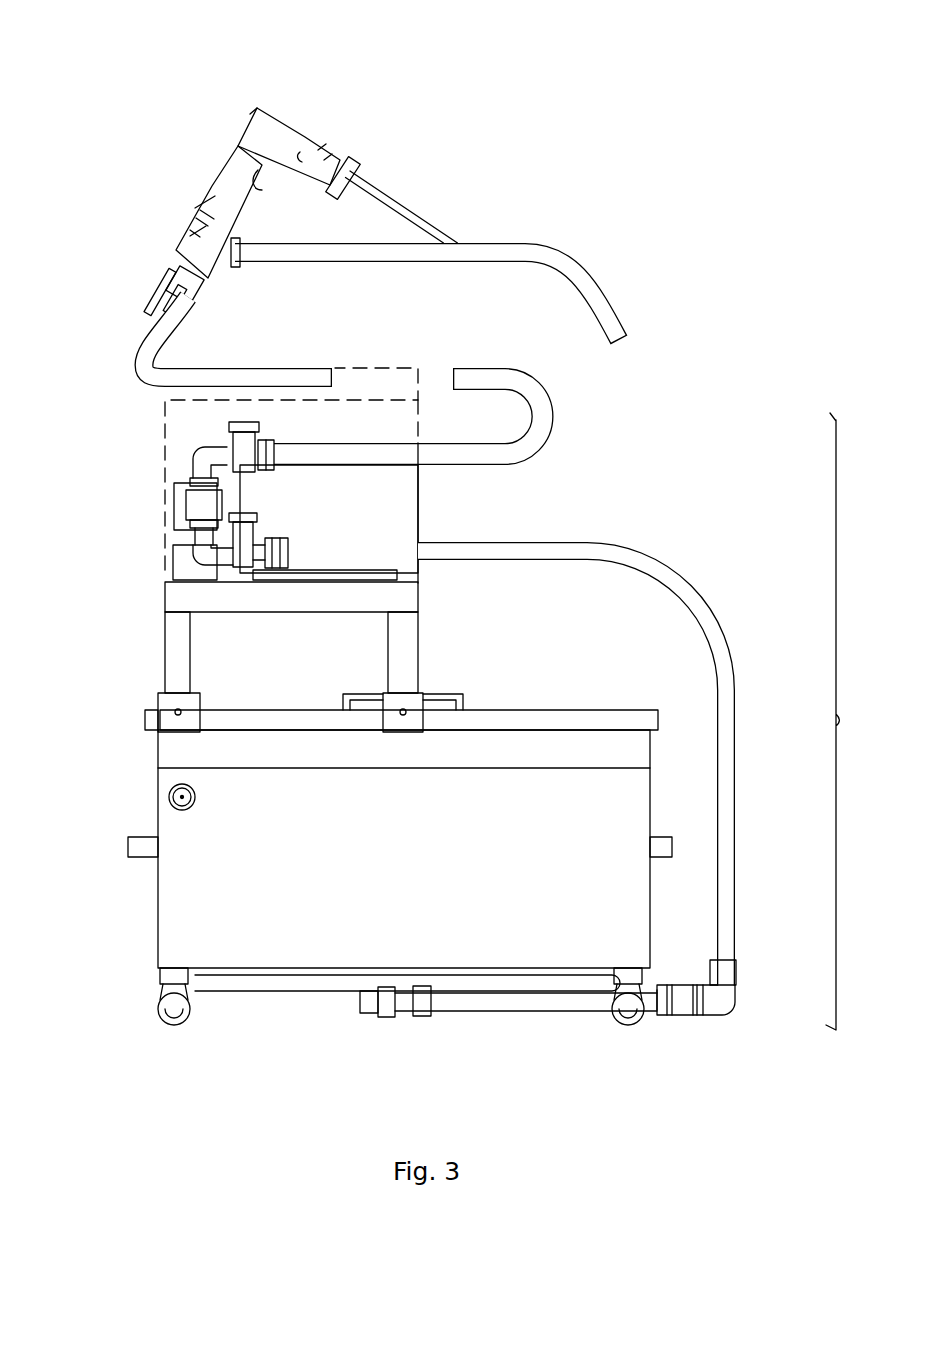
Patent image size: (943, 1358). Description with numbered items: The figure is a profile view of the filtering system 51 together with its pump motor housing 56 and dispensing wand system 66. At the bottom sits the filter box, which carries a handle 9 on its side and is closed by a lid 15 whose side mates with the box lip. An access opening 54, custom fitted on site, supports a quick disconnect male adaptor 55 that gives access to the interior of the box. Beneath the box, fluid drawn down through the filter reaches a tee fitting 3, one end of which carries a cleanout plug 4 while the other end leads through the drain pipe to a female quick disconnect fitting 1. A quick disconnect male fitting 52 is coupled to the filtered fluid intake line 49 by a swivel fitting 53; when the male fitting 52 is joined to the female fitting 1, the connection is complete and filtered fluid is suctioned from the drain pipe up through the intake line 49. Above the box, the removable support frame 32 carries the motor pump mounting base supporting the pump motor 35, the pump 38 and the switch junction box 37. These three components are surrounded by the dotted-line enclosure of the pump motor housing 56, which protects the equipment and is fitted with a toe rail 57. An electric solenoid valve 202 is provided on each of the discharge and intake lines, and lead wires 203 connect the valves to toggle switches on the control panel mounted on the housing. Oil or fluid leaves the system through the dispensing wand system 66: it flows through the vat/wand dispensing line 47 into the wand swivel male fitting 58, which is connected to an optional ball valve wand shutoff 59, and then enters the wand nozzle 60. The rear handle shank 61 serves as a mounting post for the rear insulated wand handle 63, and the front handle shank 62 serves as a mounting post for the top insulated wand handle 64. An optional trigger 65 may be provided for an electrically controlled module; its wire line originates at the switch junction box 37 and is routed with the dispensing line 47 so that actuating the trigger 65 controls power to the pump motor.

The female quick disconnect fitting 1 is at (663, 1020).
The tee fitting 3 is at (405, 1006).
The cleanout plug 4 is at (356, 1000).
The handle 9 is at (136, 860).
The lid 15 is at (145, 720).
The removable support frame 32 is at (165, 620).
The pump motor 35 is at (422, 516).
The switch junction box 37 is at (165, 566).
The pump 38 is at (170, 510).
The vat/wand dispensing line 47 is at (553, 414).
The filtered fluid intake line 49 is at (722, 622).
The filtering system 51 is at (854, 721).
The quick disconnect male fitting 52 is at (693, 1020).
The swivel fitting 53 is at (738, 1000).
The access opening 54 is at (170, 803).
The quick disconnect male adaptor 55 is at (168, 790).
The pump motor housing 56 is at (163, 417).
The toe rail 57 is at (420, 363).
The wand swivel male fitting 58 is at (168, 278).
The ball valve wand shutoff 59 is at (140, 305).
The wand nozzle 60 is at (628, 344).
The rear handle shank 61 is at (197, 212).
The front handle shank 62 is at (416, 210).
The rear insulated wand handle 63 is at (202, 193).
The top insulated wand handle 64 is at (283, 124).
The trigger 65 is at (268, 183).
The dispensing wand system 66 is at (258, 92).
The electric solenoid valve 202 is at (227, 433).
The lead wires 203 is at (243, 424).